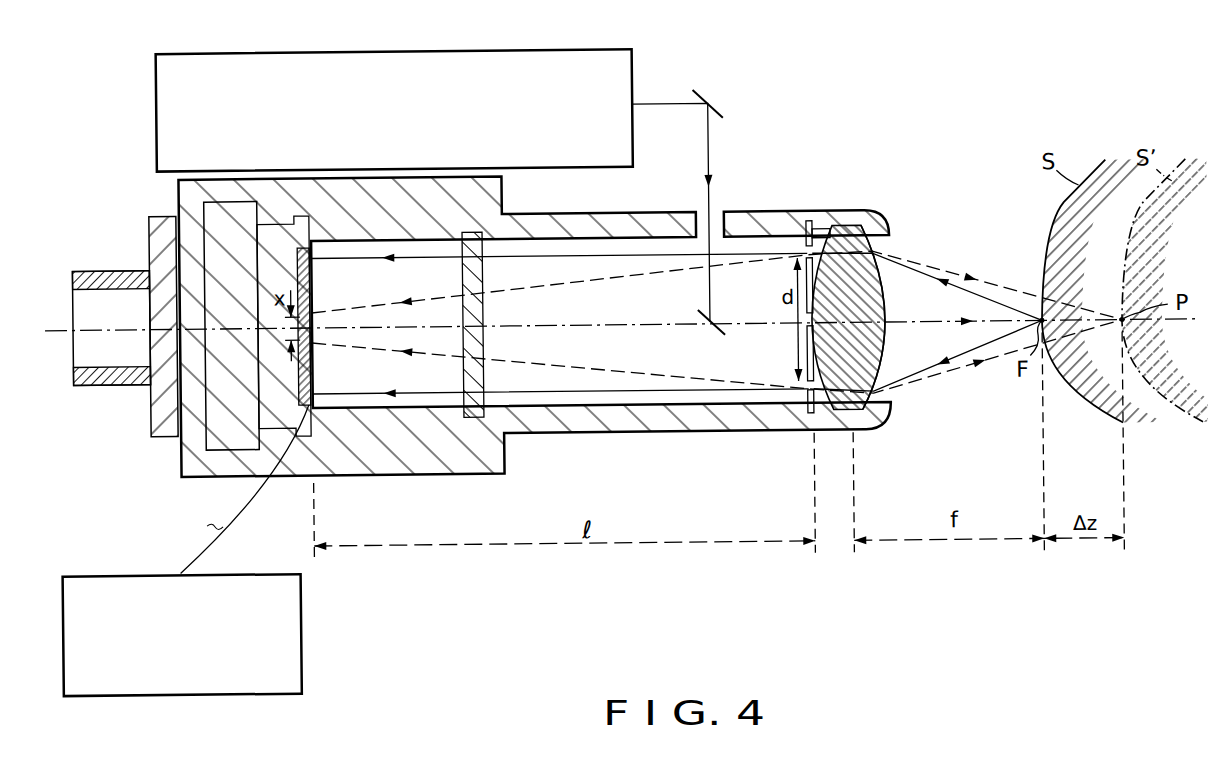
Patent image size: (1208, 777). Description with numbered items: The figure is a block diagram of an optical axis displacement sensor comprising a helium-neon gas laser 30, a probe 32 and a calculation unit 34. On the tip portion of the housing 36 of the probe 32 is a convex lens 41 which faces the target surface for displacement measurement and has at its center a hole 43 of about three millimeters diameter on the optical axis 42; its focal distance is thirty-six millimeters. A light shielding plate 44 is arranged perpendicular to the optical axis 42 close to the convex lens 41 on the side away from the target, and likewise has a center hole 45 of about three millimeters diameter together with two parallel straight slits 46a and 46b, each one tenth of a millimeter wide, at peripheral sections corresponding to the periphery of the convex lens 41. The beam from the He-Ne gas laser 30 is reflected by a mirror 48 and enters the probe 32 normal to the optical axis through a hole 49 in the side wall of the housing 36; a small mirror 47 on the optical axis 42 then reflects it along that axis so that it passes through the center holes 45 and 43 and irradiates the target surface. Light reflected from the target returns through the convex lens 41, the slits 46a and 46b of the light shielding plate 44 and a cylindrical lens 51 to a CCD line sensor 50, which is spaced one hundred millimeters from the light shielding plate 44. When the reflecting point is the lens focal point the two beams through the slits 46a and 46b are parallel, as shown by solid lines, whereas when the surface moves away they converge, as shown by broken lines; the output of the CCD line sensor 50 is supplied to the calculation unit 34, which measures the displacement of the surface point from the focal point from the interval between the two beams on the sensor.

The helium-neon gas laser 30 is at (634, 57).
The probe 32 is at (473, 474).
The calculation unit 34 is at (300, 596).
The housing 36 is at (533, 432).
The convex lens 41 is at (886, 252).
The optical axis 42 is at (600, 334).
The hole 43 is at (888, 325).
The light shielding plate 44 is at (809, 223).
The hole 45 is at (808, 322).
The slit 46a is at (824, 231).
The slit 46b is at (808, 412).
The small mirror 47 is at (716, 335).
The mirror 48 is at (727, 111).
The hole 49 is at (700, 213).
The CCD line sensor 50 is at (312, 281).
The cylindrical lens 51 is at (483, 310).